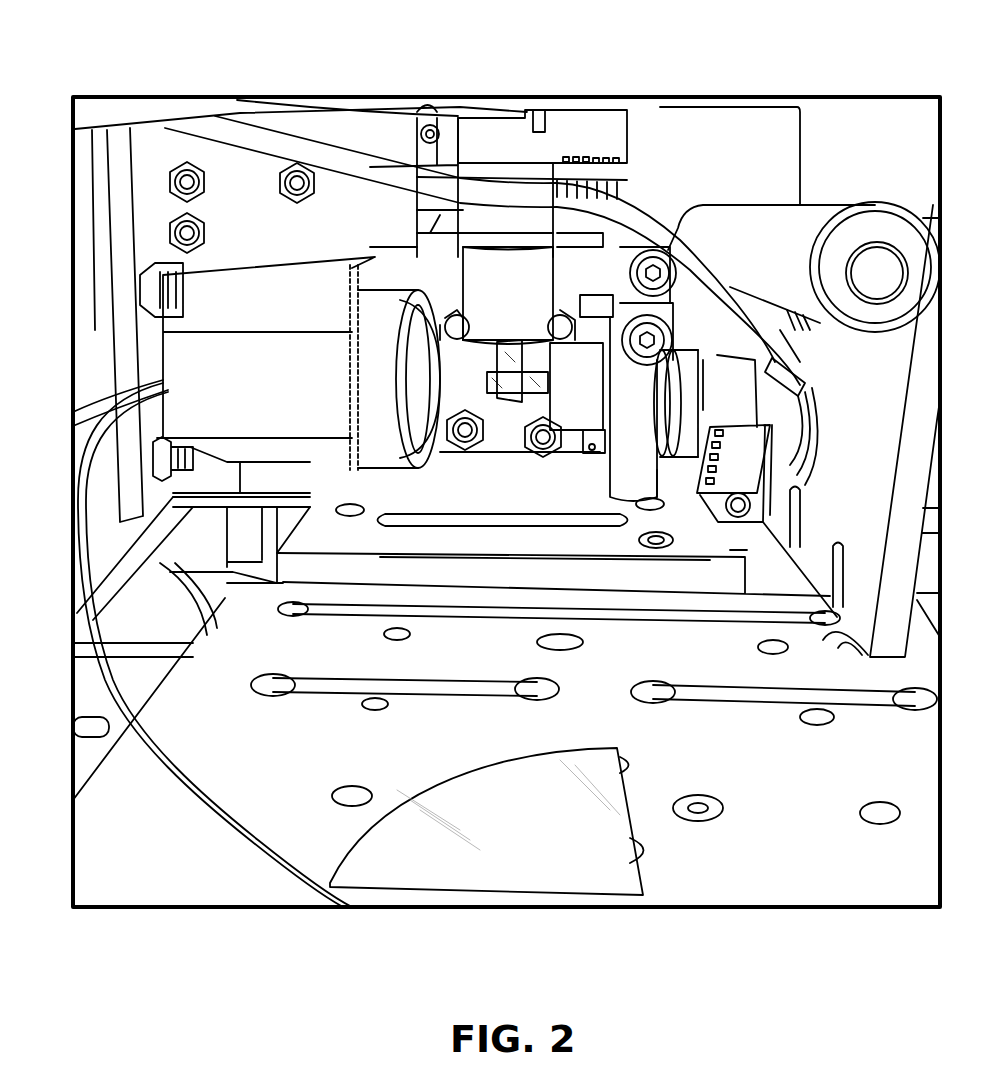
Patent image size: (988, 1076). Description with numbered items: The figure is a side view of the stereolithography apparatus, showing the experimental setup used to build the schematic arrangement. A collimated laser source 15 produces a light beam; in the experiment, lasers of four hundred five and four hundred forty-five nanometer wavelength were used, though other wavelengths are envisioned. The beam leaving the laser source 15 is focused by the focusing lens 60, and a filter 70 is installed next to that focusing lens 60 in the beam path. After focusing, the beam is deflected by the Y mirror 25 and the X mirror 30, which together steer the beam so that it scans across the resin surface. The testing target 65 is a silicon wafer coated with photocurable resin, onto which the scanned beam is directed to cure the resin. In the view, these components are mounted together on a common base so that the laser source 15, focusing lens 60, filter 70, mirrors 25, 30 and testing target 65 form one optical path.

The collimated laser source 15 is at (262, 315).
The focusing lens 60 is at (386, 317).
The X mirror 30 is at (523, 338).
The Y mirror 25 is at (551, 377).
The filter 70 is at (345, 375).
The testing target 65 is at (590, 830).